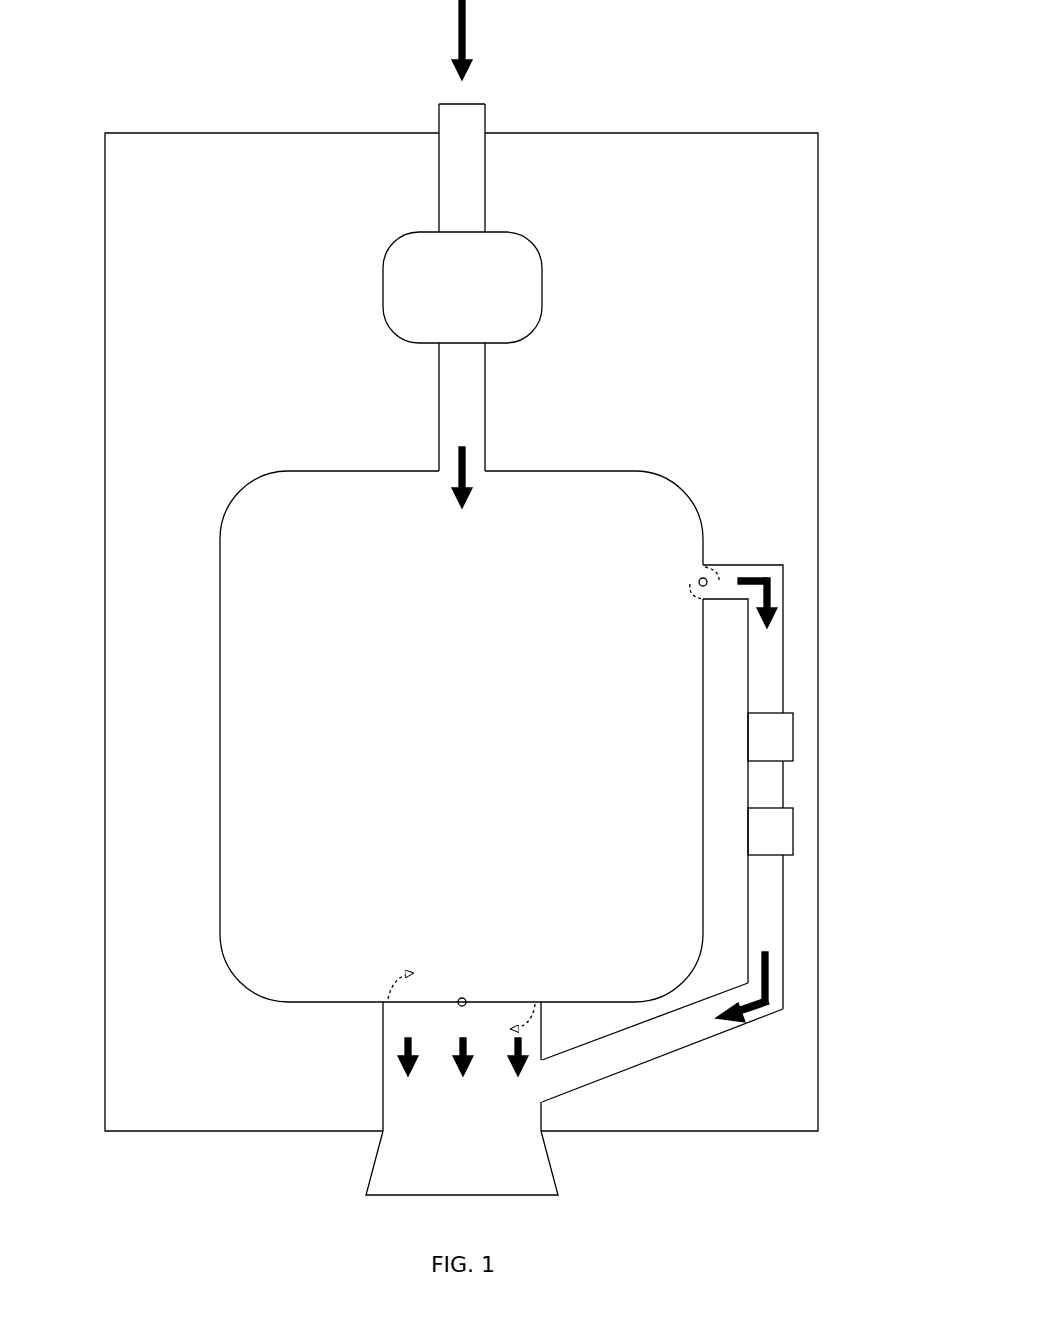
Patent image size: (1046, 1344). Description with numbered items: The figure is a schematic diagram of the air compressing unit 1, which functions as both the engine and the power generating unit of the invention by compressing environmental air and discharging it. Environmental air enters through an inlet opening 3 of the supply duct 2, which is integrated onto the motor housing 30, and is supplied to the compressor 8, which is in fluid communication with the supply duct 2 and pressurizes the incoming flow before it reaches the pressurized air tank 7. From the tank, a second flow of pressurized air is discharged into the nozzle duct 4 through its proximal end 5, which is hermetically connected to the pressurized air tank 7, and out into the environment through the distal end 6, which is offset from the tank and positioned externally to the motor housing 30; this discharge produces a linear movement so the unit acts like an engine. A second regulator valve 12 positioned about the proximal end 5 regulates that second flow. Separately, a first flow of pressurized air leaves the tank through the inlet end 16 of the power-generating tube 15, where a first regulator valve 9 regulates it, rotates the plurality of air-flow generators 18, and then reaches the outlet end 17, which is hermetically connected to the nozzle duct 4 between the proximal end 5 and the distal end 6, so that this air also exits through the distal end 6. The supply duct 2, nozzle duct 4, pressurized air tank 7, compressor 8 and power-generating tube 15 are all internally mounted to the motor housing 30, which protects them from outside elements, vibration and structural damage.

The air compressing unit 1 is at (725, 90).
The supply duct 2 is at (489, 206).
The inlet opening 3 is at (447, 101).
The nozzle duct 4 is at (390, 1097).
The proximal end 5 is at (377, 1008).
The distal end 6 is at (364, 1170).
The pressurized air tank 7 is at (220, 797).
The compressor 8 is at (537, 290).
The first regulator valve 9 is at (682, 578).
The second regulator valve 12 is at (500, 994).
The power-generating tube 15 is at (783, 612).
The inlet end 16 is at (711, 562).
The outlet end 17 is at (584, 1090).
The air-flow generators 18 is at (797, 738).
The motor housing 30 is at (818, 1073).